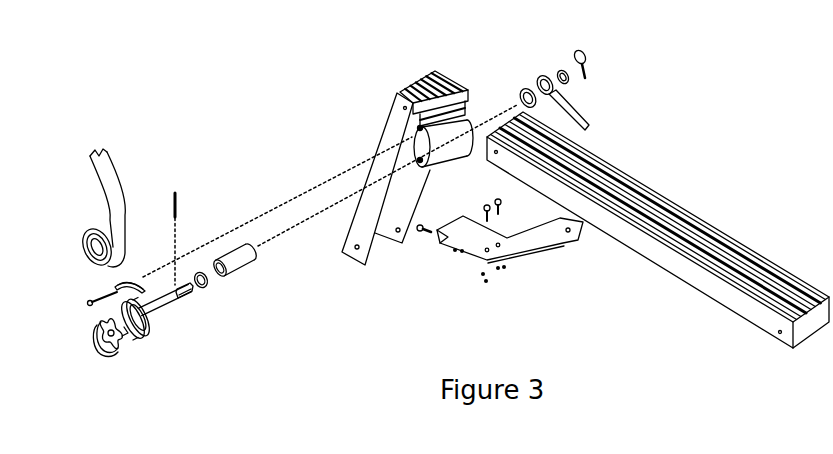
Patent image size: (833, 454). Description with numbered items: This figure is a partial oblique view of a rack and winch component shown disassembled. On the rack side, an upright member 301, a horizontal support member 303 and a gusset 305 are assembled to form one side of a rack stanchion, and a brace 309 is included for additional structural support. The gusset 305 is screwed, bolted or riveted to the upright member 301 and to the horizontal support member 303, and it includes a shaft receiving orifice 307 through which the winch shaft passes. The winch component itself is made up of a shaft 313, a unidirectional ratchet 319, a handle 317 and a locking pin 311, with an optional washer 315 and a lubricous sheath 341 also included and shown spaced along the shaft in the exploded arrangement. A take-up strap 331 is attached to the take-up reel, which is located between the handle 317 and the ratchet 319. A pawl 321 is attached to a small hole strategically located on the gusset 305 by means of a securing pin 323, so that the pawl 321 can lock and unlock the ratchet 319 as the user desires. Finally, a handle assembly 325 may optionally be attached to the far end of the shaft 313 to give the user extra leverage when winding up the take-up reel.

The upright member 301 is at (398, 125).
The horizontal support member 303 is at (665, 258).
The gusset 305 is at (427, 82).
The shaft receiving orifice 307 is at (467, 120).
The brace 309 is at (530, 248).
The locking pin 311 is at (182, 208).
The shaft 313 is at (160, 303).
The washer 315 is at (210, 292).
The handle 317 is at (110, 332).
The unidirectional ratchet 319 is at (140, 333).
The pawl 321 is at (133, 277).
The securing pin 323 is at (97, 287).
The handle assembly 325 is at (582, 46).
The take-up strap 331 is at (98, 198).
The lubricous sheath 341 is at (238, 260).